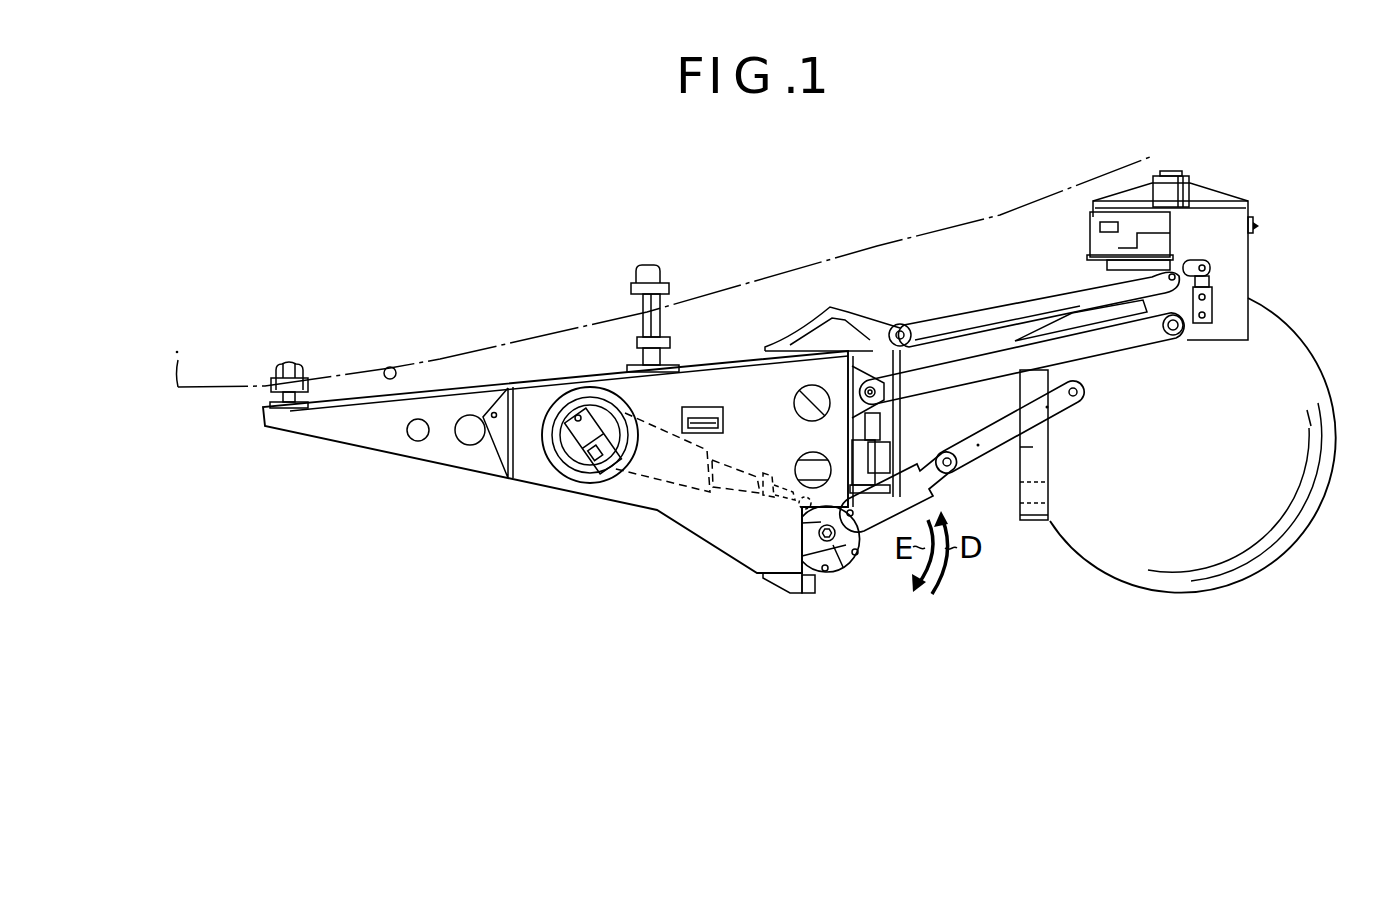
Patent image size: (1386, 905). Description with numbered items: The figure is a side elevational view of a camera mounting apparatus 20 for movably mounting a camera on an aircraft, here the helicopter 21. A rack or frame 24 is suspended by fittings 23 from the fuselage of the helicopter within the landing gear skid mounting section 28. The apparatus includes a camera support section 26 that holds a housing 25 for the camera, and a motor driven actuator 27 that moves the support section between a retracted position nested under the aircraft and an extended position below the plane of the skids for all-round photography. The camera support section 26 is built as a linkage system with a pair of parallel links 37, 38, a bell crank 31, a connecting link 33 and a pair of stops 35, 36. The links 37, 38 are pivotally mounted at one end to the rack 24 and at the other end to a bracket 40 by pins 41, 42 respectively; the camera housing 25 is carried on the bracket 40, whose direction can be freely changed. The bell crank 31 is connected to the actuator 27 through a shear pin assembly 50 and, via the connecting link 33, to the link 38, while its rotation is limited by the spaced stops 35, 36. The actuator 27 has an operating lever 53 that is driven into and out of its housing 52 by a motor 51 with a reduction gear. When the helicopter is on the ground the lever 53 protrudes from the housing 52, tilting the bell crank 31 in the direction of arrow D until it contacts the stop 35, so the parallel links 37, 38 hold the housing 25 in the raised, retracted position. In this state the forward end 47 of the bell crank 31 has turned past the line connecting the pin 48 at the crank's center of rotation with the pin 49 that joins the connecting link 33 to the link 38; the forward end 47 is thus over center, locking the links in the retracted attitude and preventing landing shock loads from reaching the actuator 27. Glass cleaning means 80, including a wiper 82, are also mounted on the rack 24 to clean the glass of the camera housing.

The camera mounting apparatus 20 is at (1033, 247).
The helicopter 21 is at (1150, 157).
The fittings 23 is at (285, 364).
The rack 24 is at (440, 462).
The housing 25 is at (1287, 550).
The camera support section 26 is at (1226, 186).
The motor driven actuator 27 is at (593, 492).
The landing gear skid mounting section 28 is at (391, 366).
The bell crank 31 is at (843, 574).
The connecting link 33 is at (1005, 443).
The stop 35 is at (844, 564).
The stop 36 is at (808, 598).
The link 37 is at (1057, 298).
The link 38 is at (1108, 355).
The bracket 40 is at (1245, 198).
The pin 41 is at (898, 325).
The pin 42 is at (1188, 260).
The forward end 47 is at (956, 468).
The pin 48 is at (831, 575).
The pin 49 is at (1074, 398).
The shear pin assembly 50 is at (800, 508).
The motor 51 is at (570, 476).
The housing 52 is at (653, 488).
The operating lever 53 is at (722, 488).
The glass cleaning means 80 is at (911, 412).
The wiper 82 is at (898, 462).